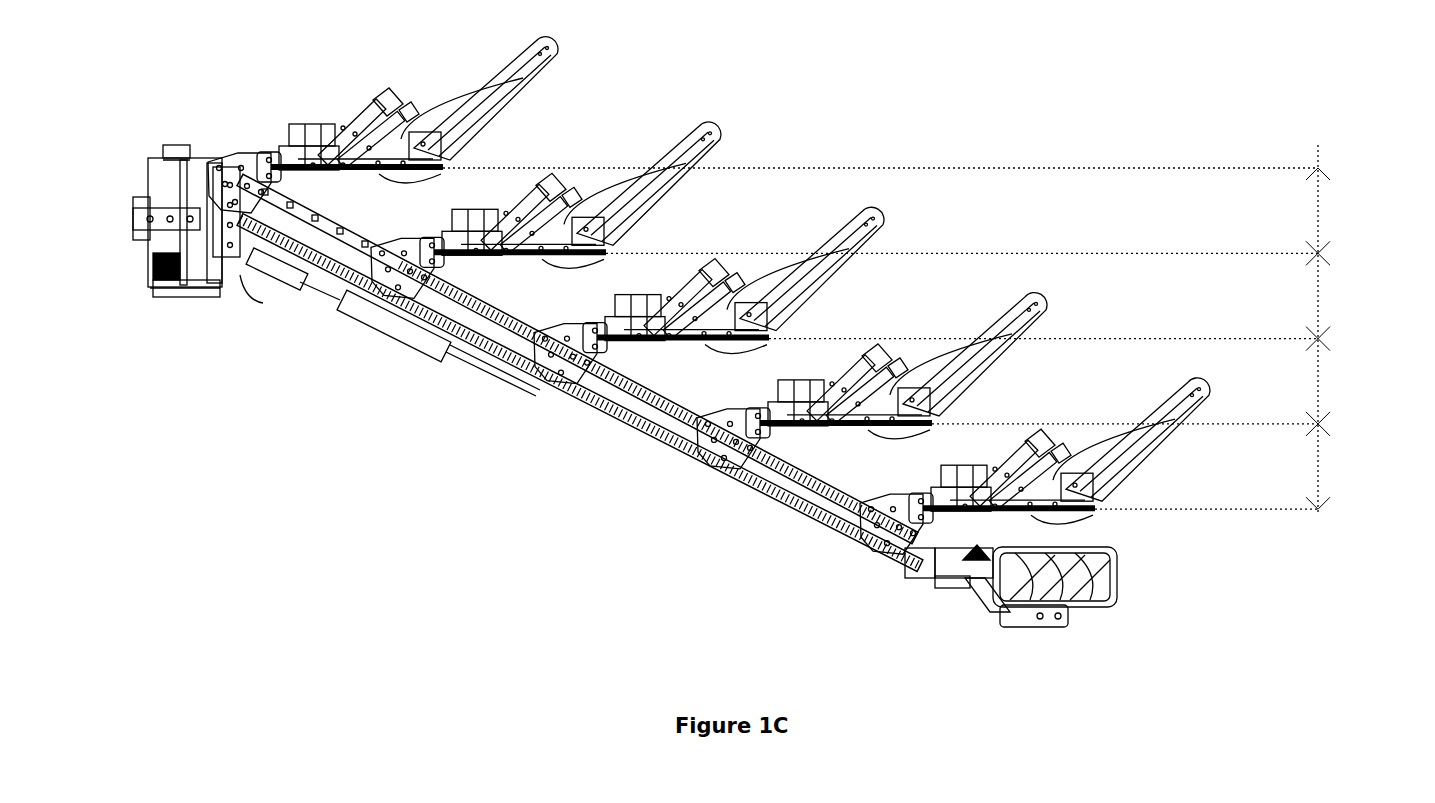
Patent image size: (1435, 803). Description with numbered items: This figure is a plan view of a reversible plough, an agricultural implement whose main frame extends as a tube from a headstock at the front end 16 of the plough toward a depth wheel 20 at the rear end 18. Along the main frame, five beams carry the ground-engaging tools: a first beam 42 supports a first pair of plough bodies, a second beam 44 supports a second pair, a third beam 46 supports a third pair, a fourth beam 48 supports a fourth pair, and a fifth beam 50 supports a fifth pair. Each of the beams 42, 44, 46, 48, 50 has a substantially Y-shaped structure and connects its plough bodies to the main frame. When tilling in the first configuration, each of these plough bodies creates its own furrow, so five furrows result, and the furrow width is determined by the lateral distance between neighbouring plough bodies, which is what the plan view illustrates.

The front end 16 is at (148, 221).
The rear end 18 is at (1368, 328).
The depth wheel 20 is at (1098, 595).
The first beam 42 is at (303, 157).
The second beam 44 is at (467, 233).
The third beam 46 is at (637, 315).
The fourth beam 48 is at (820, 381).
The fifth beam 50 is at (985, 476).